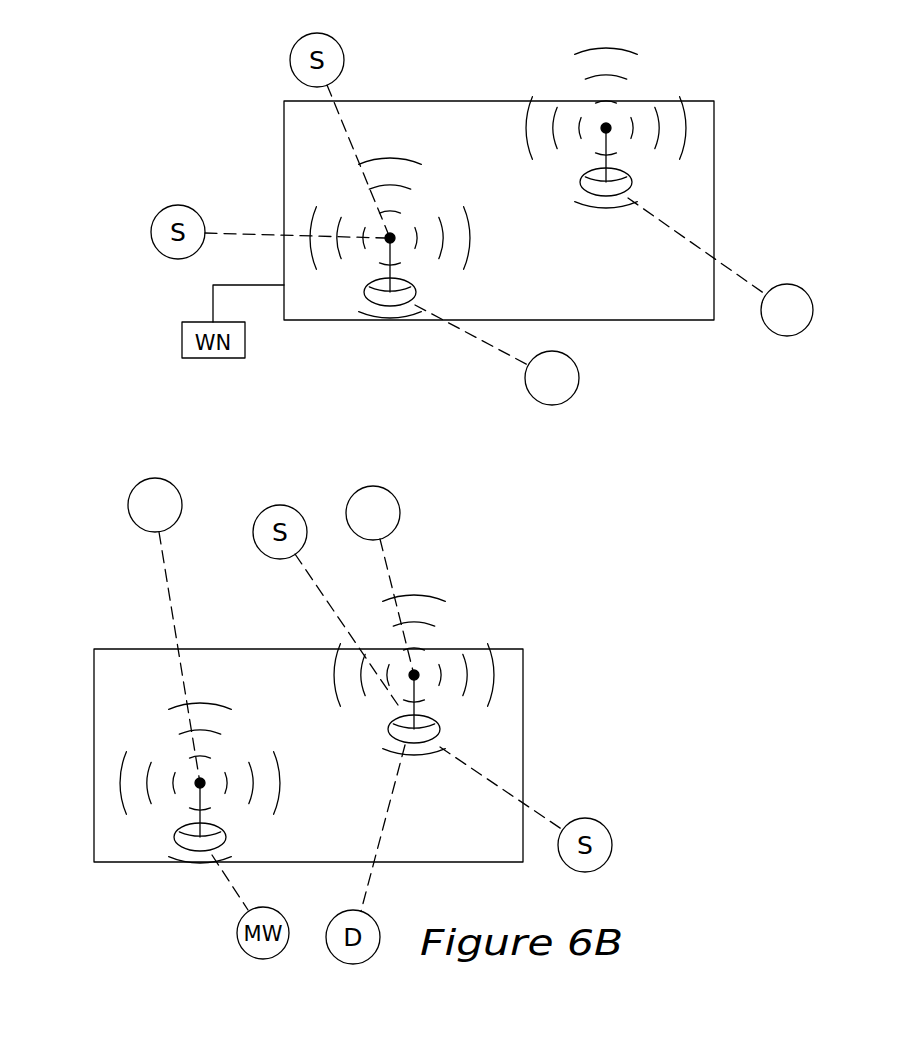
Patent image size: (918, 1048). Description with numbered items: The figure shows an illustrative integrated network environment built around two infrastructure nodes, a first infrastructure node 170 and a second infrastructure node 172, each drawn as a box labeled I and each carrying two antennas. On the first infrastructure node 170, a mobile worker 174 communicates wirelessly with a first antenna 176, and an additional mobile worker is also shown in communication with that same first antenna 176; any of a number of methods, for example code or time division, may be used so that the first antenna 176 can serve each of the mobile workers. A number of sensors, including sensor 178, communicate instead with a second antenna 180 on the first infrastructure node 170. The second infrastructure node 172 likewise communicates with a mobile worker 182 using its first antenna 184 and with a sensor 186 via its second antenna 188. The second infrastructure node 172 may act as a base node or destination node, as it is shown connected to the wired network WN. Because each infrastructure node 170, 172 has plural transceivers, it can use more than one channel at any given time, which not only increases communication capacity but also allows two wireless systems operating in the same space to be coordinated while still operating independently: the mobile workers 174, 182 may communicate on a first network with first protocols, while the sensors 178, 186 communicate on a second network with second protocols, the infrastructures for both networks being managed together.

The first infrastructure node 170 is at (94, 721).
The second infrastructure node 172 is at (284, 174).
The mobile worker 174 is at (133, 487).
The first antenna 176 is at (164, 838).
The sensor 178 is at (398, 503).
The second antenna 180 is at (430, 712).
The mobile worker 182 is at (765, 326).
The first antenna 184 is at (620, 168).
The sensor 186 is at (535, 402).
The second antenna 188 is at (380, 272).